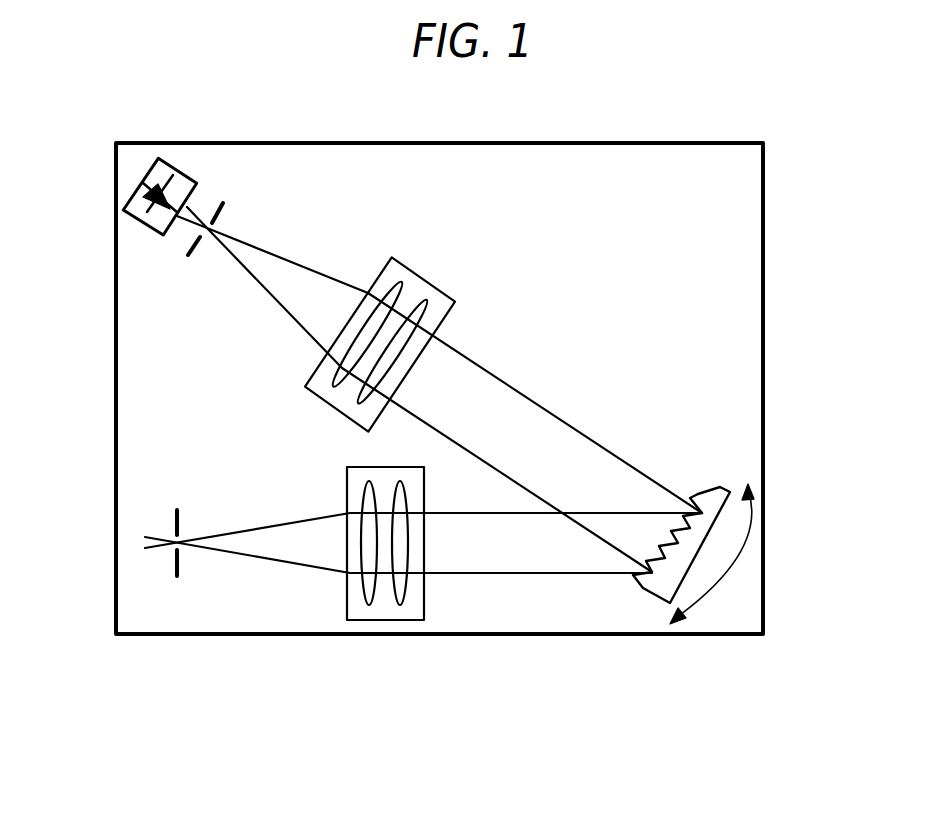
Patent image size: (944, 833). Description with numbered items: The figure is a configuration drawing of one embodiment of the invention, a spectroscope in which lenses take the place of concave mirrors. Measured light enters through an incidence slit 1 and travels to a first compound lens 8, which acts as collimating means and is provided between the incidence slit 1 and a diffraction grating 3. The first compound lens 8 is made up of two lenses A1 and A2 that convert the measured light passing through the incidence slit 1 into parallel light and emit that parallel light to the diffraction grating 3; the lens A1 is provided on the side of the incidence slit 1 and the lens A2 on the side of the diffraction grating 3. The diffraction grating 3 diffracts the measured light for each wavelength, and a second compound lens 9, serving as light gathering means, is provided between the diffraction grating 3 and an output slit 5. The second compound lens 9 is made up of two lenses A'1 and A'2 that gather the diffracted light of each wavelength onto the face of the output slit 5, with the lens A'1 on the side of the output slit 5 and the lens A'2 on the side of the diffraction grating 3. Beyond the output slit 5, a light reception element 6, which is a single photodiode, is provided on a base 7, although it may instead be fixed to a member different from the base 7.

The incidence slit 1 is at (177, 578).
The diffraction grating 3 is at (737, 487).
The output slit 5 is at (228, 203).
The light reception element 6 is at (147, 173).
The base 7 is at (613, 142).
The first compound lens 8 is at (365, 635).
The second compound lens 9 is at (405, 304).
The lens A1 is at (372, 598).
The lens A2 is at (407, 598).
The lens A'1 is at (382, 283).
The lens A'2 is at (412, 315).